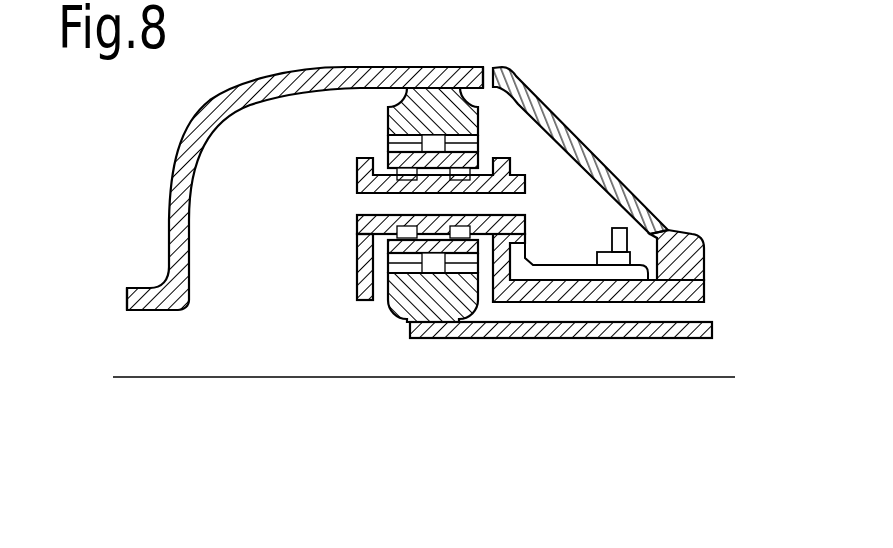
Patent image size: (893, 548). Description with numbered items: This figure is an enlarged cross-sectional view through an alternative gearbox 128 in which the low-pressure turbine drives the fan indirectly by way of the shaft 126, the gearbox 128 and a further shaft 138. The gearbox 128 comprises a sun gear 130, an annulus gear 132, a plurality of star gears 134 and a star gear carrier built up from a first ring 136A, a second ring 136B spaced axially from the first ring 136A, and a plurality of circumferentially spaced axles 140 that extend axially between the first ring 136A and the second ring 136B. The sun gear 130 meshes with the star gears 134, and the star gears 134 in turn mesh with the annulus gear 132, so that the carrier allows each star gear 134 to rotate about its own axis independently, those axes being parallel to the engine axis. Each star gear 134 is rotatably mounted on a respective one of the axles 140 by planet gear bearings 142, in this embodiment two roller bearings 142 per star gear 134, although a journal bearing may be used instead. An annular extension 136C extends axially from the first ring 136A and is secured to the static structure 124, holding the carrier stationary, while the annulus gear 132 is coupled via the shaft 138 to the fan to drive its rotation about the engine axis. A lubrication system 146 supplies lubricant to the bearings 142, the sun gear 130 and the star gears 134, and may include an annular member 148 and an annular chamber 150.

The static structure 124 is at (524, 83).
The shaft 126 is at (603, 333).
The gearbox 128 is at (316, 327).
The sun gear 130 is at (407, 273).
The annulus gear 132 is at (424, 116).
The star gear 134 is at (468, 164).
The first ring 136A is at (503, 264).
The second ring 136B is at (365, 252).
The annular extension 136C is at (627, 272).
The shaft 138 is at (468, 64).
The axle 140 is at (383, 186).
The planet gear bearing 142 is at (445, 214).
The lubrication system 146 is at (623, 222).
The annular member 148 is at (563, 267).
The annular chamber 150 is at (537, 277).